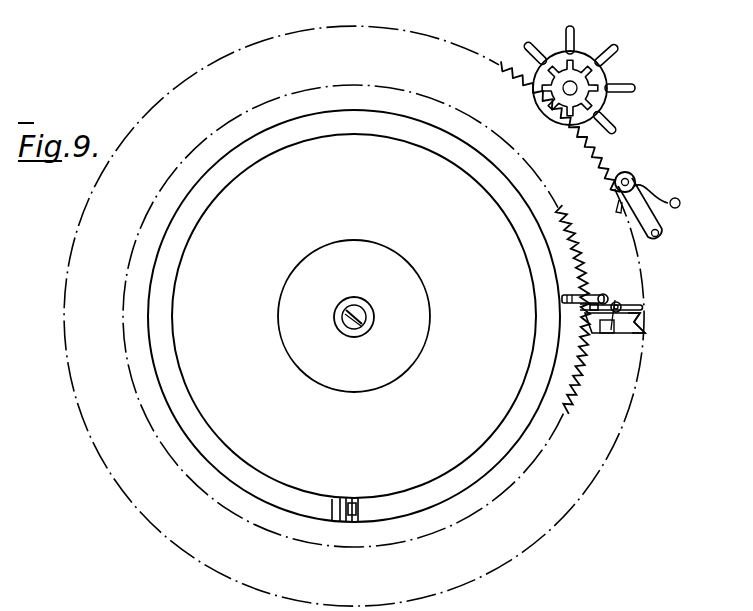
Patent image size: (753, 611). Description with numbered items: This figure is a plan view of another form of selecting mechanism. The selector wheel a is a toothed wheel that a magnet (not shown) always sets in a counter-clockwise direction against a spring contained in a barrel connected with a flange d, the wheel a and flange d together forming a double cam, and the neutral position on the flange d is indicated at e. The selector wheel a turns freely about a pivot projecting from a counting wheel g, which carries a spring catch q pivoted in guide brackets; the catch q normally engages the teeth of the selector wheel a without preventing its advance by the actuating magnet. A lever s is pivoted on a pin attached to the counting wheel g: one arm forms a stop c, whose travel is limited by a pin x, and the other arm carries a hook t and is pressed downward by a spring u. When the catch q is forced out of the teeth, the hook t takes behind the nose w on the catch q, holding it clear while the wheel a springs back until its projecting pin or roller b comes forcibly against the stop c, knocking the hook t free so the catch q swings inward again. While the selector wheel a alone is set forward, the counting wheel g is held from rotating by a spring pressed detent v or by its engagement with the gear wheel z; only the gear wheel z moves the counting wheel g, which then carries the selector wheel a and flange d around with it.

The selector wheel a is at (562, 404).
The projecting pin or roller b is at (580, 297).
The stop c is at (616, 298).
The flange d is at (405, 130).
The neutral position e is at (351, 497).
The counting wheel g is at (598, 166).
The spring catch q is at (610, 335).
The lever s is at (636, 327).
The hook t is at (645, 308).
The spring u is at (638, 297).
The spring pressed detent v is at (634, 178).
The nose w is at (646, 327).
The pin x is at (580, 306).
The gear wheel z is at (572, 86).